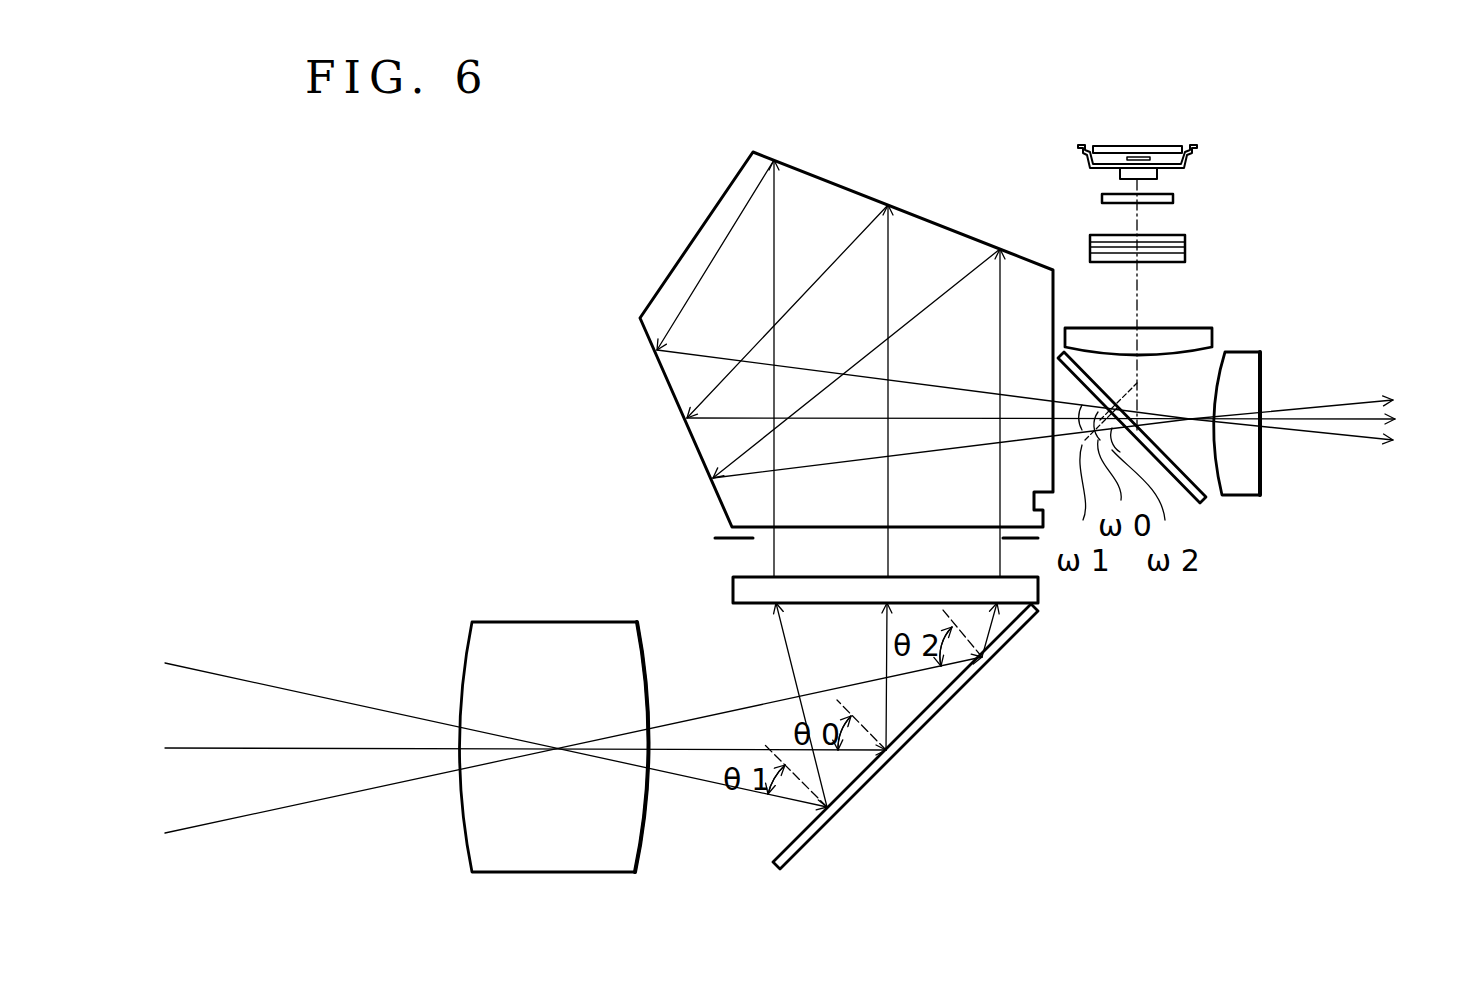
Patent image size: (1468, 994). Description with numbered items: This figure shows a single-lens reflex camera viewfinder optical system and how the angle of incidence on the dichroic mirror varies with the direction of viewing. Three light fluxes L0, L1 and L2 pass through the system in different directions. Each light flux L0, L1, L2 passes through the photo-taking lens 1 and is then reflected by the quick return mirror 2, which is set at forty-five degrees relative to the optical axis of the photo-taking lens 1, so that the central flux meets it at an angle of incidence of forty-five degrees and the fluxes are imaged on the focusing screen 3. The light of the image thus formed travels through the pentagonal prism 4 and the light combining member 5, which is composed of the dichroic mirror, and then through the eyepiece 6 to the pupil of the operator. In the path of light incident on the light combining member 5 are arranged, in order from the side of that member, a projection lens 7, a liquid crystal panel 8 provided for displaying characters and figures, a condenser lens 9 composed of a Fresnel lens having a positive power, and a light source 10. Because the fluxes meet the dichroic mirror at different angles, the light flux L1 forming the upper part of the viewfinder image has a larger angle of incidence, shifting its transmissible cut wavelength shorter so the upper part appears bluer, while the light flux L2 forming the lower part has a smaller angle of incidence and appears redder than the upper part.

The photo-taking lens 1 is at (490, 622).
The quick return mirror 2 is at (868, 788).
The focusing screen 3 is at (733, 586).
The pentagonal prism 4 is at (657, 359).
The light combining member 5 is at (1204, 505).
The eyepiece 6 is at (1252, 497).
The projection lens 7 is at (1212, 338).
The liquid crystal panel 8 is at (1185, 242).
The condenser lens 9 is at (1173, 197).
The light source 10 is at (1140, 145).
The light flux L0 is at (1432, 420).
The light flux L1 is at (1338, 468).
The light flux L2 is at (1318, 383).